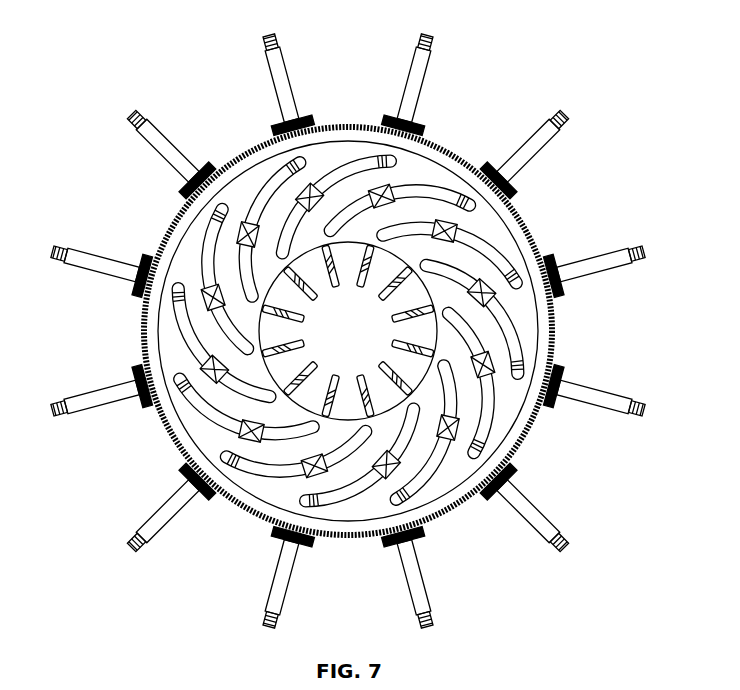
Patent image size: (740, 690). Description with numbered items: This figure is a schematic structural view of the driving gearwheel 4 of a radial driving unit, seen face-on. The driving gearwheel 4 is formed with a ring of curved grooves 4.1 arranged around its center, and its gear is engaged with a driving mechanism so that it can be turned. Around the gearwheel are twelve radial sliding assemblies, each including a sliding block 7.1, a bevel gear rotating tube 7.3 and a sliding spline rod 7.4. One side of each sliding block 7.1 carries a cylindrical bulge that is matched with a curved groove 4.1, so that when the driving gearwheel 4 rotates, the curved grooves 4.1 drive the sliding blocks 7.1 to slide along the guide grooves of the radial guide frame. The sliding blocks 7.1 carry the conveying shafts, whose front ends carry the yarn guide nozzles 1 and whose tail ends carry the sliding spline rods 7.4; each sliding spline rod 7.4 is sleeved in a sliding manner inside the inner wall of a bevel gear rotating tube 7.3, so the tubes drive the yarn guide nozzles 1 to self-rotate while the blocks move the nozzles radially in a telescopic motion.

The yarn guide nozzle 1 is at (365, 272).
The driving gearwheel 4 is at (535, 250).
The curved groove 4.1 is at (493, 417).
The sliding block 7.1 is at (388, 463).
The bevel gear rotating tube 7.3 is at (497, 172).
The sliding spline rod 7.4 is at (555, 120).